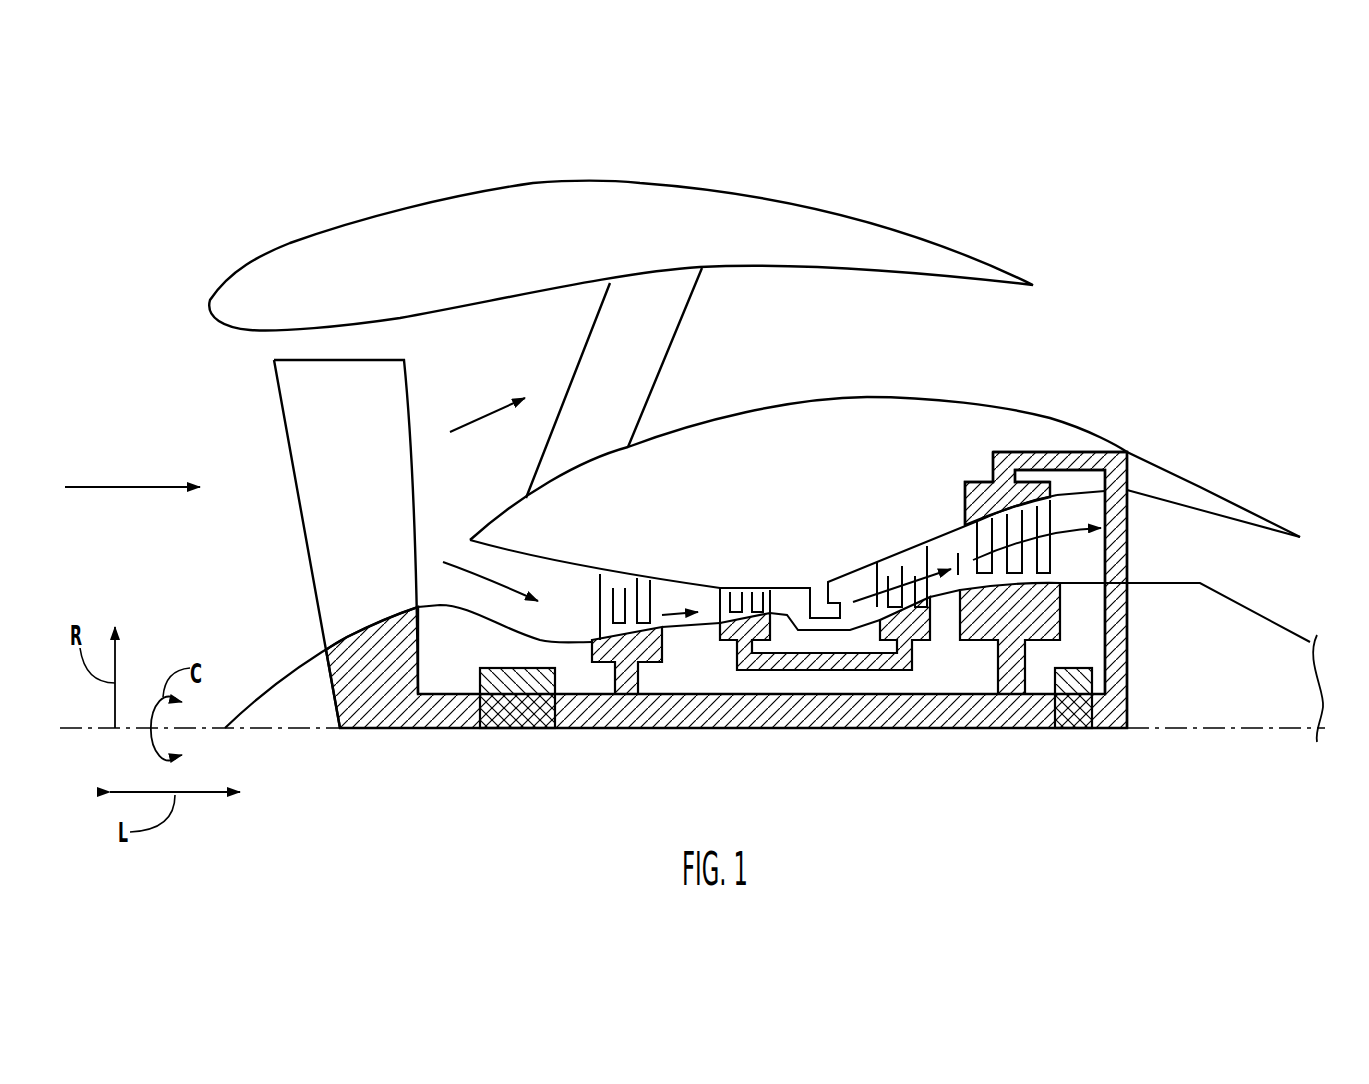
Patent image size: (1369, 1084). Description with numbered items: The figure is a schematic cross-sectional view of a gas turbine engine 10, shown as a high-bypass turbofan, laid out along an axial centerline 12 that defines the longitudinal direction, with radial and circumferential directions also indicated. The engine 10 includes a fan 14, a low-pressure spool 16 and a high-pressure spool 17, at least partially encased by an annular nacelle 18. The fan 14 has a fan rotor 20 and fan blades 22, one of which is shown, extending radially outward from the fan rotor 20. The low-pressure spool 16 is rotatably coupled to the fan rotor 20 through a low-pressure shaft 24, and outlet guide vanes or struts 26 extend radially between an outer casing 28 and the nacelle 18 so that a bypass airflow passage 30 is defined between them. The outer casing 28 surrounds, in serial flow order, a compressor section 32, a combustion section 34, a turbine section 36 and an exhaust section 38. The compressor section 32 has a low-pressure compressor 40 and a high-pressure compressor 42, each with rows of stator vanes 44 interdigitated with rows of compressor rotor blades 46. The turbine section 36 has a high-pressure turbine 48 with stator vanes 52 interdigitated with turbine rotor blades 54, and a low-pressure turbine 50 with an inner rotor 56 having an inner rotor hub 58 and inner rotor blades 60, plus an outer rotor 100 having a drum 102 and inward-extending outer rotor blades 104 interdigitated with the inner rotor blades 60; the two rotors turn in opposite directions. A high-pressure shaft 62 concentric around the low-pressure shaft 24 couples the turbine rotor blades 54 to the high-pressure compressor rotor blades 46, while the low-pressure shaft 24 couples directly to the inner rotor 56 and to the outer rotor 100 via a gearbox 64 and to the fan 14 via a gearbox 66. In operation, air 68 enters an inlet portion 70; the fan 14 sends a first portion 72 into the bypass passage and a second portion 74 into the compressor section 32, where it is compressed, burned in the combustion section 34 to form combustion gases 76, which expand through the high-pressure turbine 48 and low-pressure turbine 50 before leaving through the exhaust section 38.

The gas turbine engine 10 is at (156, 193).
The axial centerline 12 is at (1205, 730).
The fan 14 is at (236, 450).
The low-pressure spool 16 is at (890, 764).
The high-pressure spool 17 is at (836, 697).
The annular nacelle 18 is at (337, 223).
The fan rotor 20 is at (298, 662).
The fan blade 22 is at (287, 490).
The low-pressure shaft 24 is at (628, 730).
The outlet guide vanes or struts 26 is at (682, 327).
The outer casing 28 is at (995, 403).
The cavity 30 is at (744, 375).
The compressor section 32 is at (677, 550).
The combustion section 34 is at (825, 560).
The turbine section 36 is at (925, 488).
The exhaust section 38 is at (1304, 575).
The low-pressure compressor 40 is at (615, 560).
The high-pressure compressor 42 is at (742, 561).
The stator vanes 44 is at (592, 598).
The compressor rotor blades 46 is at (593, 630).
The high-pressure turbine 48 is at (900, 534).
The low-pressure turbine 50 is at (945, 469).
The stator vanes 52 is at (893, 565).
The turbine rotor blades 54 is at (933, 592).
The inner rotor 56 is at (1082, 618).
The inner rotor hub 58 is at (1047, 643).
The inner rotor blades 60 is at (1050, 522).
The high-pressure shaft 62 is at (781, 657).
The gearbox 64 is at (1073, 715).
The gearbox 66 is at (520, 712).
The air 68 is at (122, 487).
The inlet portion 70 is at (211, 365).
The first portion of air 72 is at (487, 410).
The second portion of air 74 is at (443, 562).
The combustion gases 76 is at (870, 597).
The outer rotor 100 is at (1035, 435).
The drum 102 is at (975, 467).
The outer rotor blades 104 is at (934, 540).